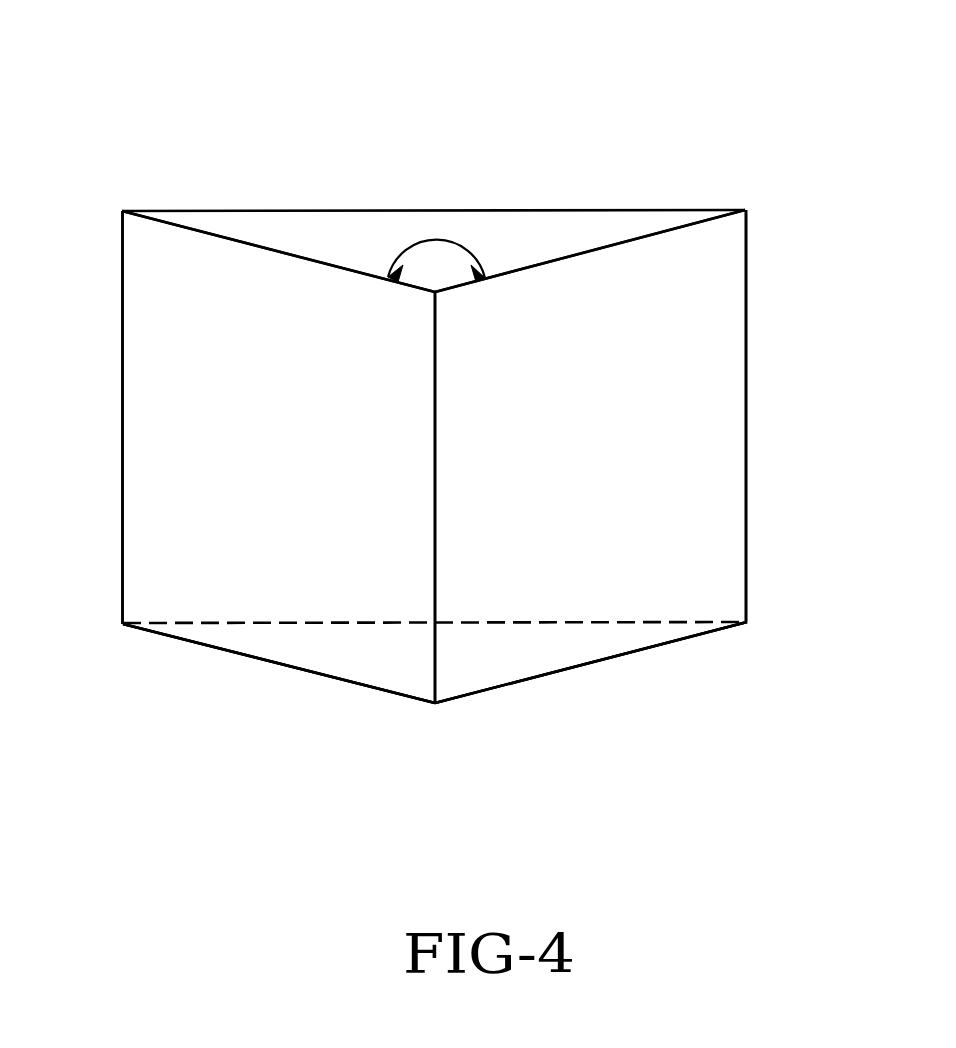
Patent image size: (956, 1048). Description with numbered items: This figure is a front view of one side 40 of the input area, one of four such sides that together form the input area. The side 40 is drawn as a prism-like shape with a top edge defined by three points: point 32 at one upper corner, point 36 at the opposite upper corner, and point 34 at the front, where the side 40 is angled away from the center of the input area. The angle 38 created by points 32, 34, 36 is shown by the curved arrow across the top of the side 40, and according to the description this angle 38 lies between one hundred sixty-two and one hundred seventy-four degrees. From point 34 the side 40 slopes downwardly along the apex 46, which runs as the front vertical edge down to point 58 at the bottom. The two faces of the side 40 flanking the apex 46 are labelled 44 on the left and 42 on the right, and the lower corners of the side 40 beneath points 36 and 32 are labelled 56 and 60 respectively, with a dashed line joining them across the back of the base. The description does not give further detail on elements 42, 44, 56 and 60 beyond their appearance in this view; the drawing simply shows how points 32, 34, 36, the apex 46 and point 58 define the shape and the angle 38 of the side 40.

The side 40 is at (512, 128).
The point 32 is at (745, 210).
The point 34 is at (435, 292).
The point 36 is at (122, 211).
The angle 38 is at (433, 240).
The right side face 42 is at (693, 435).
The left side face 44 is at (162, 422).
The apex 46 is at (435, 497).
The bottom left vertex 56 is at (123, 624).
The point 58 is at (435, 703).
The bottom right vertex 60 is at (747, 622).